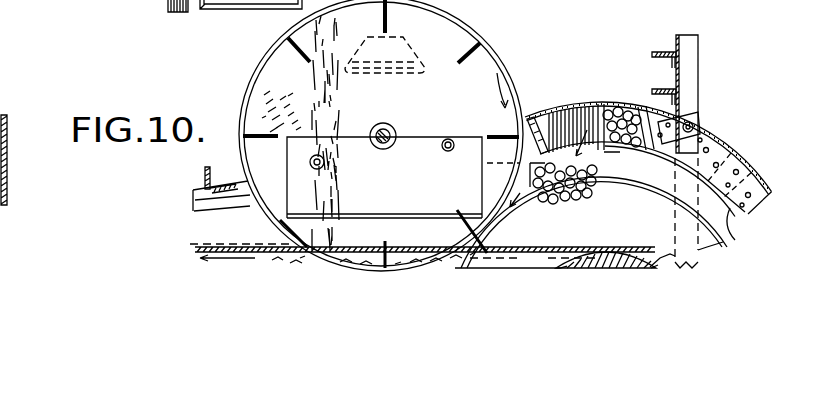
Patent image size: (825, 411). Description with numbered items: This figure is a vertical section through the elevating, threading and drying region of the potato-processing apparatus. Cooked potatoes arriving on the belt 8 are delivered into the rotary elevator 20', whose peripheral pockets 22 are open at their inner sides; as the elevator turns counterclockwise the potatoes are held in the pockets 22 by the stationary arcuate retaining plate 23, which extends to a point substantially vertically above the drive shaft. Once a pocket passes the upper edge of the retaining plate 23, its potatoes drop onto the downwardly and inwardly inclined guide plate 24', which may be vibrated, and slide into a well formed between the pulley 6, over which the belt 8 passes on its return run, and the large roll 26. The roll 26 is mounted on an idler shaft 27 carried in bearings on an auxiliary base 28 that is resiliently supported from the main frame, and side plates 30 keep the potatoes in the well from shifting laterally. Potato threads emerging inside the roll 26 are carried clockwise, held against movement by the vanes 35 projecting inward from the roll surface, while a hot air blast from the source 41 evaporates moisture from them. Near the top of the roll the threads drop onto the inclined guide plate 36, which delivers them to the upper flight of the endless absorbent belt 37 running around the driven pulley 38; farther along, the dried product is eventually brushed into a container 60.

The pulley 6 is at (589, 213).
The belt 8 is at (653, 187).
The rotary elevator 20' is at (648, 156).
The peripheral pockets 22 is at (610, 108).
The stationary arcuate retaining plate 23 is at (727, 238).
The guide plate 24' is at (564, 117).
The roll 26 is at (506, 67).
The idler shaft 27 is at (386, 128).
The auxiliary base 28 is at (220, 208).
The side plates 30 is at (594, 199).
The vanes 35 is at (466, 50).
The guide plate 36 is at (384, 177).
The endless absorbent belt 37 is at (407, 247).
The pulley 38 is at (613, 257).
The hot air source 41 is at (402, 70).
The container 60 is at (247, 9).